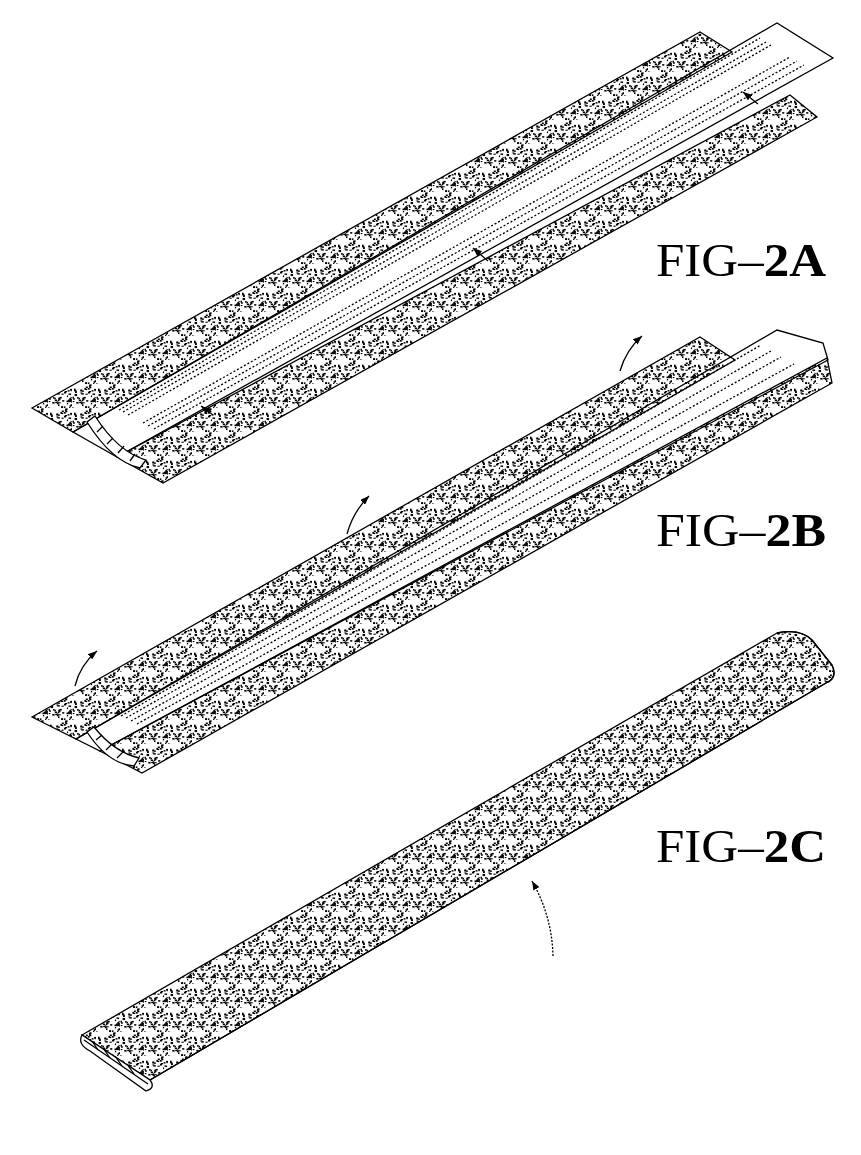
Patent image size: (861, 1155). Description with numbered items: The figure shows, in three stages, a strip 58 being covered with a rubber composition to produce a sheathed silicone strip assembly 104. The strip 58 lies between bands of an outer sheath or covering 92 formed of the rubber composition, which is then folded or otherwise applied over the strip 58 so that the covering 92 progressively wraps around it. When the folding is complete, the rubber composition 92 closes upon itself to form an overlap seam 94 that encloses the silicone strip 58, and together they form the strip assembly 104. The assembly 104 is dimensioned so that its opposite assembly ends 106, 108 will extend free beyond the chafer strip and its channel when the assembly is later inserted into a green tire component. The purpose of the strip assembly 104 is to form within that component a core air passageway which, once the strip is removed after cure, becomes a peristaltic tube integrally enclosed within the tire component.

In FIG. 2A, the strip 58 is at (407, 268).
In FIG. 2B, the strip 58 is at (487, 528).
In FIG. 2C, the strip 58 is at (110, 1067).
In FIG. 2A, the outer sheath or covering 92 is at (223, 298).
In FIG. 2B, the outer sheath or covering 92 is at (277, 607).
In FIG. 2C, the outer sheath or covering 92 is at (460, 847).
In FIG. 2C, the overlap seam 94 is at (350, 927).
In FIG. 2C, the sheathed silicone strip assembly 104 is at (553, 932).
In FIG. 2C, the assembly end 106 is at (108, 1018).
In FIG. 2C, the assembly end 108 is at (758, 645).